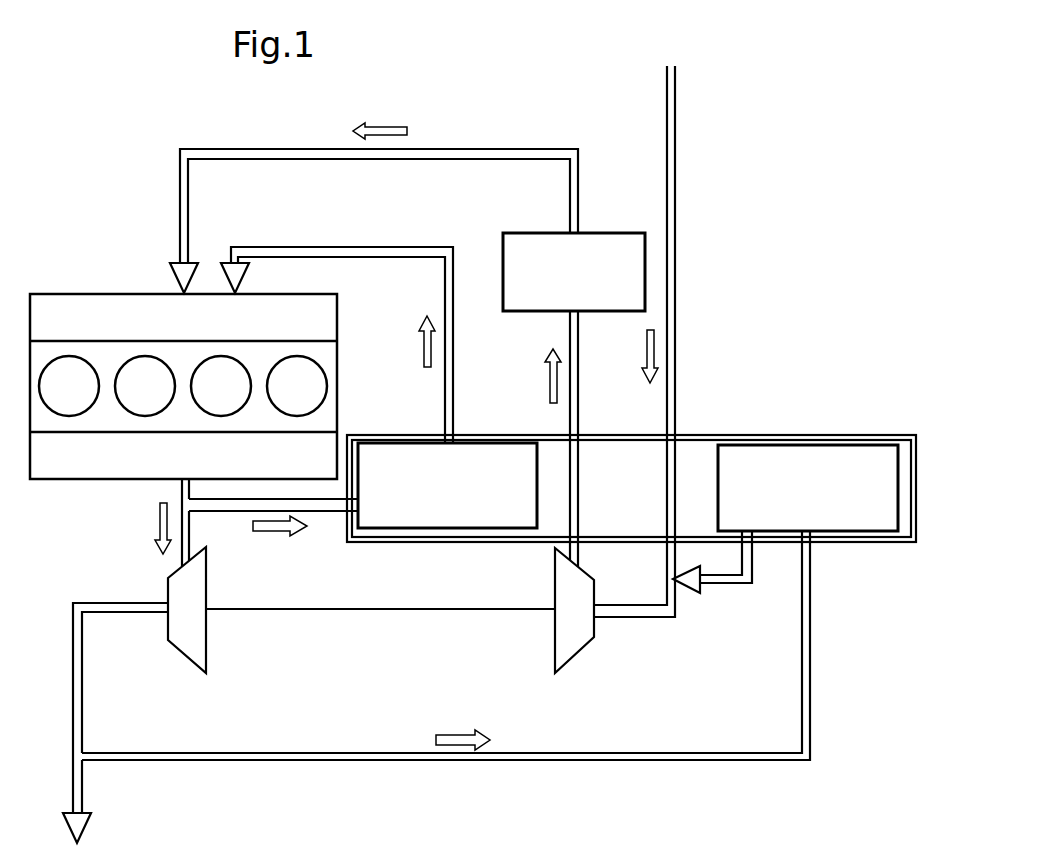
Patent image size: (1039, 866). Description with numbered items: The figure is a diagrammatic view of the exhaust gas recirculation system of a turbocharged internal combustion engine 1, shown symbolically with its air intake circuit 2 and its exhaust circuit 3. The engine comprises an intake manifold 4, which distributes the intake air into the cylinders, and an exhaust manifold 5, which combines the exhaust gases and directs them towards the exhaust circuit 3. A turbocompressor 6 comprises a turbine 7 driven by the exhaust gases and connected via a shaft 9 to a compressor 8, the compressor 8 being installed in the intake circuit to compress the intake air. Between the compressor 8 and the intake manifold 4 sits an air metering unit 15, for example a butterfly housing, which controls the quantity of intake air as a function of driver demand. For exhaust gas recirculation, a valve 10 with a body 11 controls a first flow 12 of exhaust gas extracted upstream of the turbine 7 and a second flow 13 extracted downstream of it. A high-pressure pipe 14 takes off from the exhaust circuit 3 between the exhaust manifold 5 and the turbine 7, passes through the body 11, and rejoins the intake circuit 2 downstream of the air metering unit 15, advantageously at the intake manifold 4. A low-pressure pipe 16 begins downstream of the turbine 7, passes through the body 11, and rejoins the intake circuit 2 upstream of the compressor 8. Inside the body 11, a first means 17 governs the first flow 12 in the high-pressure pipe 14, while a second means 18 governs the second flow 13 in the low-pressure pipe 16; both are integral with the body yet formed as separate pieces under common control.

The internal combustion engine 1 is at (53, 282).
The air intake circuit 2 is at (497, 148).
The exhaust circuit 3 is at (178, 489).
The intake manifold 4 is at (144, 304).
The exhaust manifold 5 is at (65, 468).
The turbocompressor 6 is at (410, 637).
The turbine 7 is at (193, 628).
The compressor 8 is at (580, 630).
The shaft 9 is at (465, 612).
The valve 10 is at (631, 472).
The body 11 is at (633, 447).
The first flow 12 is at (265, 533).
The second flow 13 is at (462, 734).
The high-pressure pipe 14 is at (446, 412).
The air metering unit 15 is at (605, 250).
The low-pressure pipe 16 is at (295, 762).
The first means 17 is at (447, 485).
The second means 18 is at (785, 519).